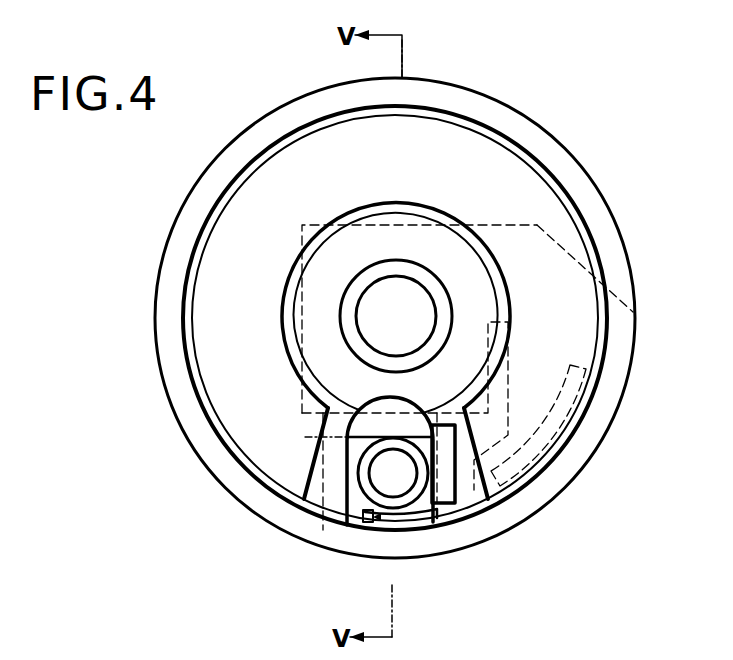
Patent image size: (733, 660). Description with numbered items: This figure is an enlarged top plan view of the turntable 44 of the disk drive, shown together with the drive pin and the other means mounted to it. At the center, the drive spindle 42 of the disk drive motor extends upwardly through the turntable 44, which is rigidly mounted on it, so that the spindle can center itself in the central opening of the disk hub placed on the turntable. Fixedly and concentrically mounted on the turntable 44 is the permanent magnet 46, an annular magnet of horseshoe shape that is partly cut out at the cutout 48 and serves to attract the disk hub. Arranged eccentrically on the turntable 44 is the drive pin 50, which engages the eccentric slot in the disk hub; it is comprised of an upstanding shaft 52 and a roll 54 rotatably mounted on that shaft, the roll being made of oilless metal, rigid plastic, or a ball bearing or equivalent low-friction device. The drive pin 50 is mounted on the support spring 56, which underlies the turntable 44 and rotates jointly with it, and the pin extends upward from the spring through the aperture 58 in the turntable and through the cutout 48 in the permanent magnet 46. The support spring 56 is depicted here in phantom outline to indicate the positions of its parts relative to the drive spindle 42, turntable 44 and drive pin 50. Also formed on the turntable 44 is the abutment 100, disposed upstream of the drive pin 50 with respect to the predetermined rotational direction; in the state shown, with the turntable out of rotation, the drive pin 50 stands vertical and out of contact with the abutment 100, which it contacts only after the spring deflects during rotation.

The drive spindle 42 is at (396, 285).
The turntable 44 is at (584, 175).
The permanent magnet 46 is at (572, 245).
The cutout 48 is at (307, 477).
The drive pin 50 is at (376, 522).
The upstanding shaft 52 is at (404, 480).
The roll 54 is at (402, 506).
The support spring 56 is at (487, 225).
The aperture 58 is at (346, 483).
The abutment 100 is at (447, 484).